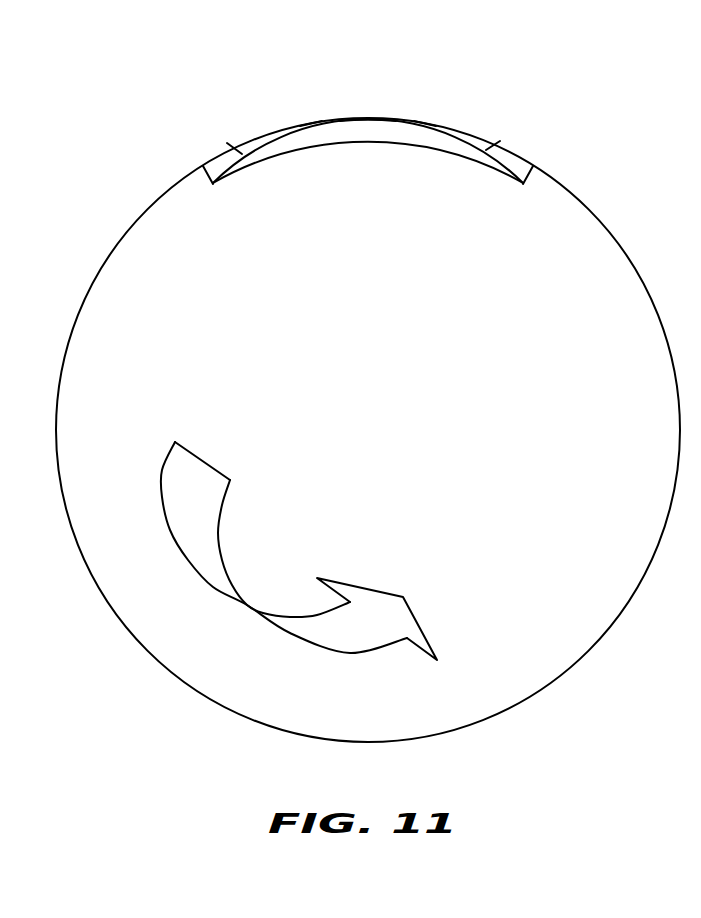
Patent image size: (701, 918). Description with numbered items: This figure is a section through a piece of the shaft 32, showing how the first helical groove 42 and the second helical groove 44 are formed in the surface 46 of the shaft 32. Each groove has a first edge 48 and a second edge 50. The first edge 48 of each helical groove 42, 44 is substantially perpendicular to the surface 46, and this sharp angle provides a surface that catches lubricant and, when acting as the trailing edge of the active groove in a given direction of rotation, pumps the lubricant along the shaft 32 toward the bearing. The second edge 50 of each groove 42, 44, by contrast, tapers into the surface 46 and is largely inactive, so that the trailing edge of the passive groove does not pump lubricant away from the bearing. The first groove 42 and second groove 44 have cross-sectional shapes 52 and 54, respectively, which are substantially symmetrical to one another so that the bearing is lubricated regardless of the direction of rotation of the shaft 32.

The shaft 32 is at (64, 593).
The first helical groove 42 is at (458, 162).
The second helical groove 44 is at (279, 152).
The surface of shaft 46 is at (360, 118).
The first edge 48 is at (210, 178).
The second edge 50 is at (310, 123).
The cross-sectional shape of first groove 52 is at (233, 145).
The cross-sectional shape of second groove 54 is at (492, 145).